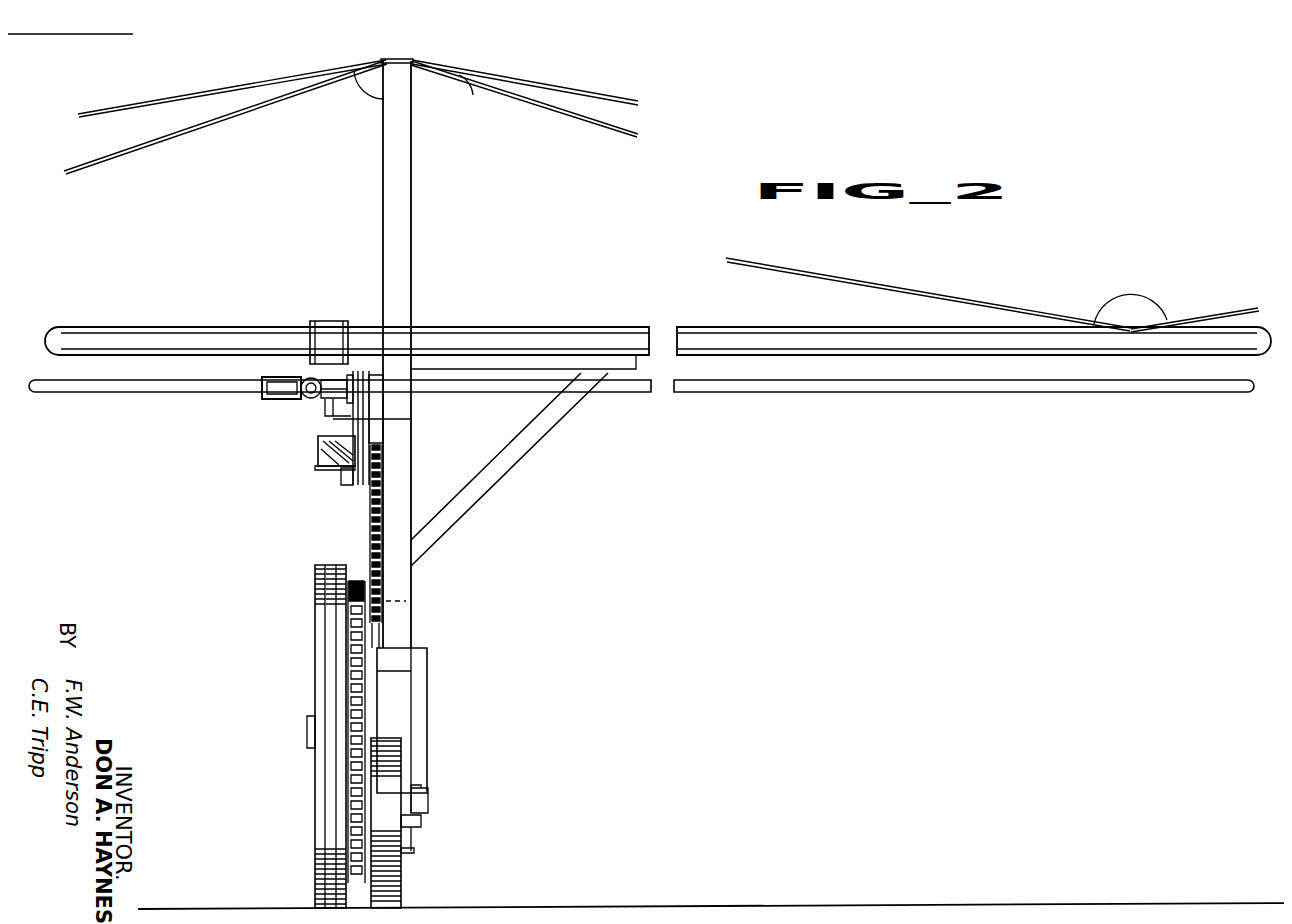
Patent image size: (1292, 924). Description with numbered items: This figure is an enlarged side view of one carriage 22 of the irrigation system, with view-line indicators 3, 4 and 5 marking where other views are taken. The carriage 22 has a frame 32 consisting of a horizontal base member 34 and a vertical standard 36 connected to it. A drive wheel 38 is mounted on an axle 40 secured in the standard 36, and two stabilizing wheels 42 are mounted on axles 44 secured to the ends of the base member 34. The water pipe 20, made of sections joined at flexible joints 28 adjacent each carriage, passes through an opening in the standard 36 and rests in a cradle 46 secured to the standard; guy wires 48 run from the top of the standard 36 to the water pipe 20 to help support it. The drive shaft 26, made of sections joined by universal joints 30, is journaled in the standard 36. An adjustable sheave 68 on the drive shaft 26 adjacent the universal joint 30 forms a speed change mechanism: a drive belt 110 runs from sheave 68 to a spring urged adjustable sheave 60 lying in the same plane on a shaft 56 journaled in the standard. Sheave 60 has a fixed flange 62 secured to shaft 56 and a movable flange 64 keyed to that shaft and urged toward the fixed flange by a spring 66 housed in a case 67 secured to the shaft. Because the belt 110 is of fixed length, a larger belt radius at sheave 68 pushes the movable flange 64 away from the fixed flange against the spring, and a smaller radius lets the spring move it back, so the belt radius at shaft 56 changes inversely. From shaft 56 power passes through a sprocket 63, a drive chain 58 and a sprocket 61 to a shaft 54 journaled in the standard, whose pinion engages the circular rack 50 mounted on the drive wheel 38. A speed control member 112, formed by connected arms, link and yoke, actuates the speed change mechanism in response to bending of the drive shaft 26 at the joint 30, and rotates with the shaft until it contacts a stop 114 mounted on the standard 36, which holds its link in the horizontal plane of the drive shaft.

The section line 3- 3 is at (128, 67).
The section line 4- 4 is at (700, 288).
The section line 5- 5 is at (295, 369).
The water pipe 20 is at (693, 331).
The carriage 22 is at (248, 493).
The drive shaft 26 is at (66, 383).
The flexible joints 28 is at (323, 340).
The universal joints 30 is at (293, 392).
The frame 32 is at (407, 620).
The horizontal base member 34 is at (420, 785).
The vertical standard 36 is at (390, 155).
The drive wheel 38 is at (307, 635).
The axle 40 is at (299, 723).
The stabilizing wheels 42 is at (395, 861).
The axles 44 is at (413, 813).
The cradle 46 is at (508, 362).
The guy wires 48 is at (462, 75).
The circular rack 50 is at (357, 691).
The shaft 54 is at (378, 582).
The shaft 56 is at (405, 445).
The drive chain 58 is at (362, 540).
The spring urged adjustable sheave 60 is at (338, 481).
The sprocket 61 is at (376, 578).
The fixed flange 62 is at (353, 479).
The sprocket 63 is at (378, 442).
The movable flange 64 is at (345, 469).
The spring 66 is at (310, 458).
The case 67 is at (311, 442).
The adjustable sheave 68 is at (345, 371).
The drive belt 110 is at (403, 411).
The speed control member 112 is at (262, 380).
The stop 114 is at (317, 400).